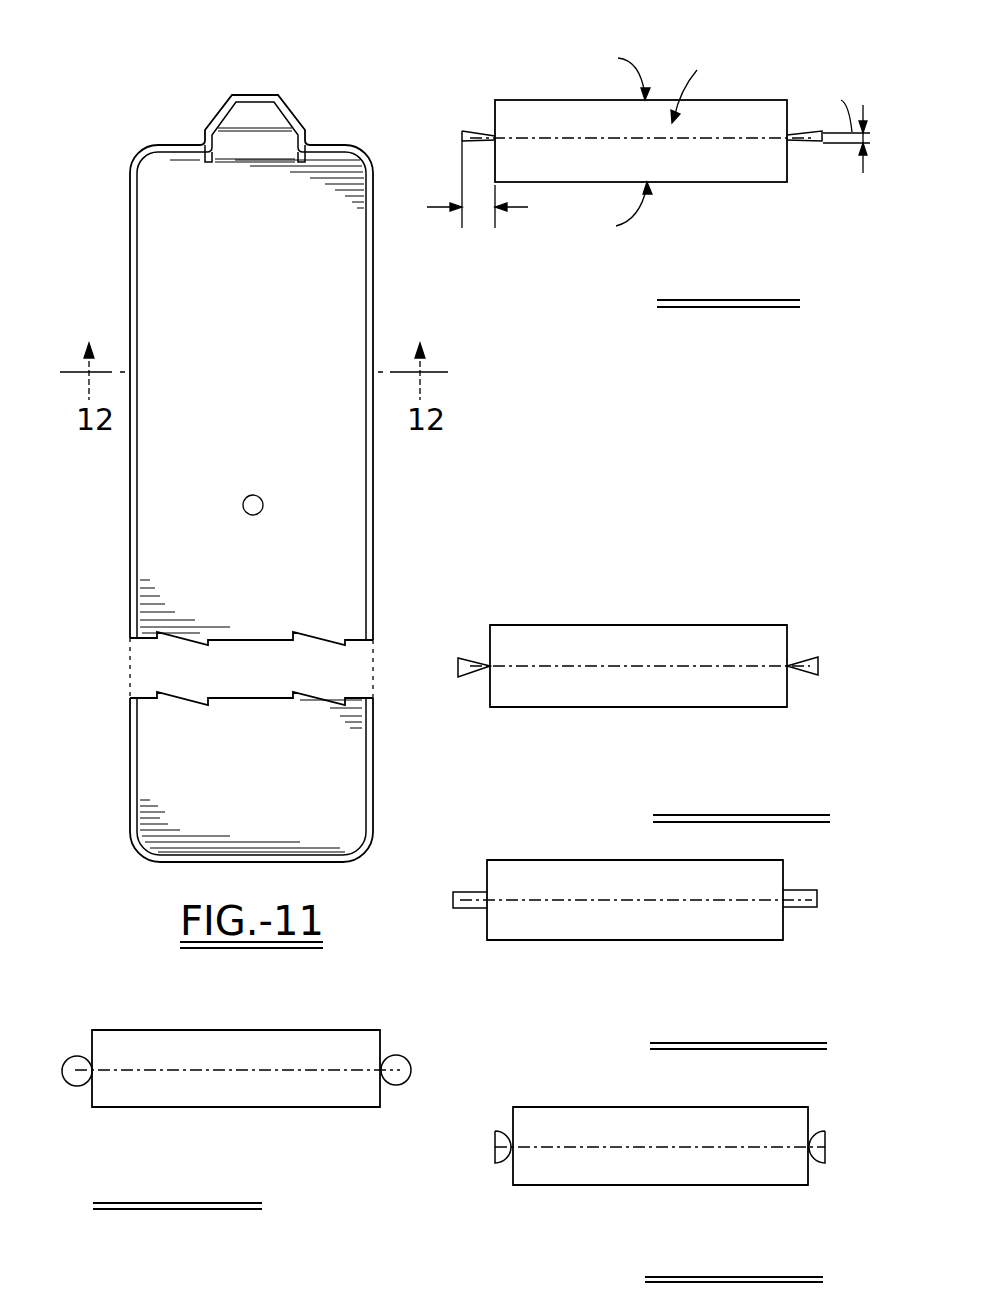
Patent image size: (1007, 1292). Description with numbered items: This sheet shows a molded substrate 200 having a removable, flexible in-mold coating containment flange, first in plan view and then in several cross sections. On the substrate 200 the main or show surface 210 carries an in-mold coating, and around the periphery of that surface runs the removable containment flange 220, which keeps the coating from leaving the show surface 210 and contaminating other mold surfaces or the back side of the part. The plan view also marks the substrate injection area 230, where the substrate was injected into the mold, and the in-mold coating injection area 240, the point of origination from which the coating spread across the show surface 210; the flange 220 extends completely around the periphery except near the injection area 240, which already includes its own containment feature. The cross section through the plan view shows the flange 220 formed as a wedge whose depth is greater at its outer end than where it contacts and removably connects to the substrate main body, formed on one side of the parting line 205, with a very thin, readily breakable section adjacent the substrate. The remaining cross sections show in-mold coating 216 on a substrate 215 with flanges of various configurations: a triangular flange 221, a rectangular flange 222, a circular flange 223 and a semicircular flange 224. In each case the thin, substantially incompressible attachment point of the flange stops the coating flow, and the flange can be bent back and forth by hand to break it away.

In FIG. 11, the substrate 200 is at (155, 140).
In FIG. 12, the substrate 200 is at (744, 88).
In FIG. 13A, the substrate 200 is at (741, 604).
In FIG. 13B, the substrate 200 is at (553, 850).
In FIG. 13C, the substrate 200 is at (133, 1020).
In FIG. 13D, the substrate 200 is at (575, 1196).
In FIG. 12, the parting line 205 is at (657, 140).
In FIG. 11, the show surface 210 is at (298, 263).
In FIG. 13A, the substrate 215 is at (645, 692).
In FIG. 13B, the substrate 215 is at (627, 922).
In FIG. 13C, the substrate 215 is at (265, 1090).
In FIG. 13D, the substrate 215 is at (690, 1167).
In FIG. 13A, the in-mold coating 216 is at (653, 624).
In FIG. 13B, the in-mold coating 216 is at (635, 860).
In FIG. 13C, the in-mold coating 216 is at (253, 1030).
In FIG. 13D, the in-mold coating 216 is at (595, 1107).
In FIG. 11, the removable in-mold coating containment flange 220 is at (135, 267).
In FIG. 12, the removable in-mold coating containment flange 220 is at (468, 128).
In FIG. 13A, the triangular flange 221 is at (465, 656).
In FIG. 13B, the rectangular flange 222 is at (462, 896).
In FIG. 13C, the circular flange 223 is at (73, 1057).
In FIG. 13D, the semicircular flange 224 is at (492, 1152).
In FIG. 11, the substrate injection area 230 is at (245, 498).
In FIG. 11, the in-mold coating injection area 240 is at (257, 108).